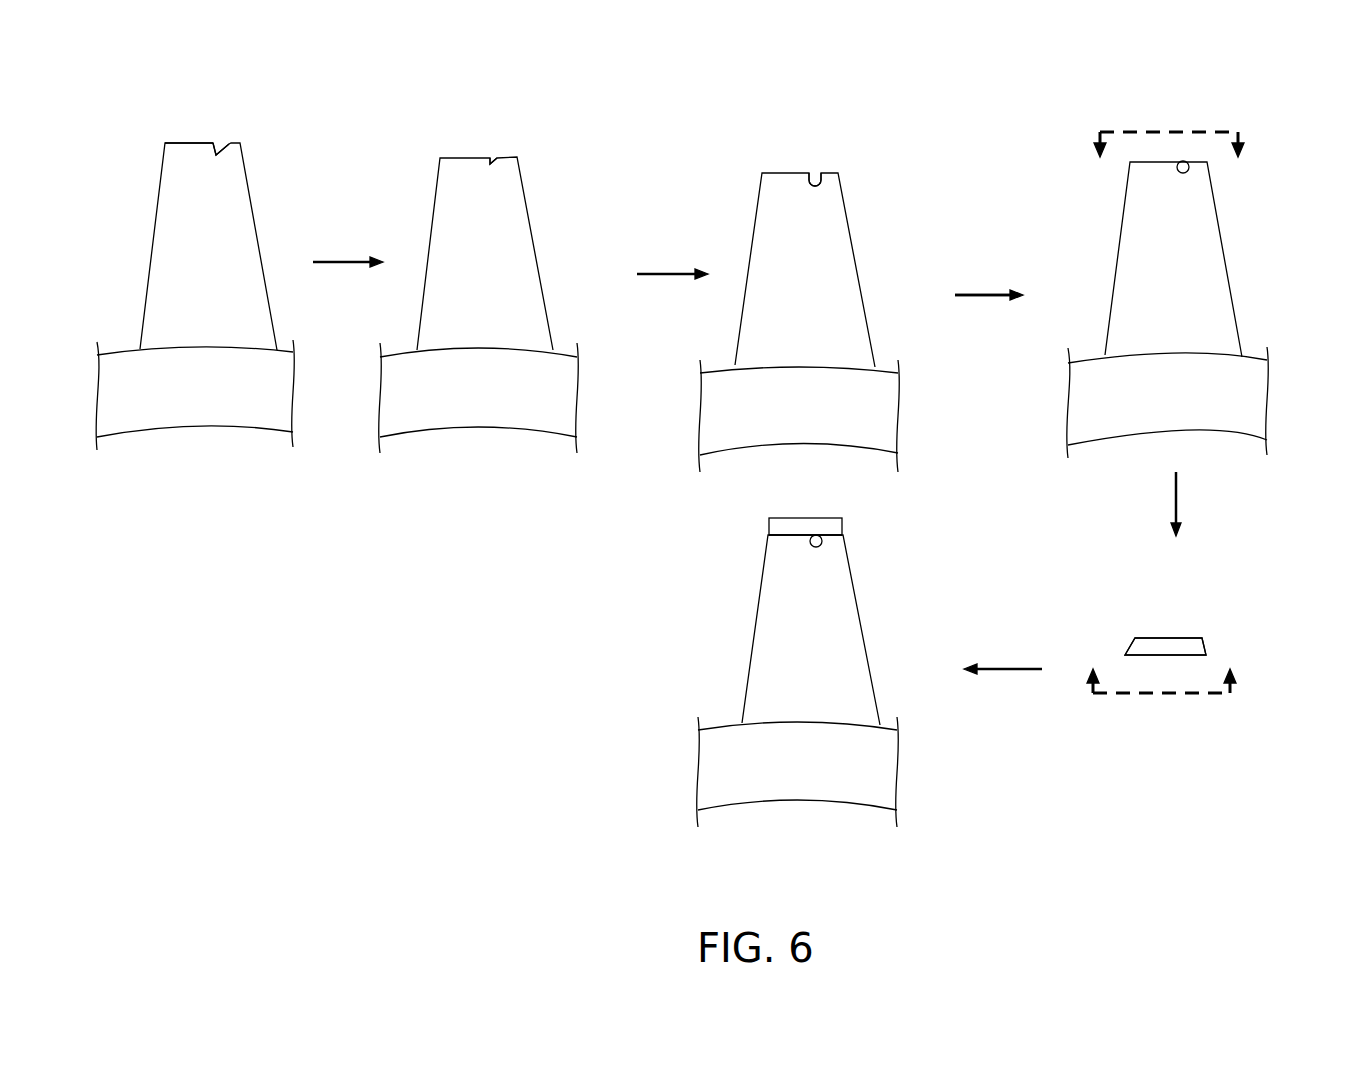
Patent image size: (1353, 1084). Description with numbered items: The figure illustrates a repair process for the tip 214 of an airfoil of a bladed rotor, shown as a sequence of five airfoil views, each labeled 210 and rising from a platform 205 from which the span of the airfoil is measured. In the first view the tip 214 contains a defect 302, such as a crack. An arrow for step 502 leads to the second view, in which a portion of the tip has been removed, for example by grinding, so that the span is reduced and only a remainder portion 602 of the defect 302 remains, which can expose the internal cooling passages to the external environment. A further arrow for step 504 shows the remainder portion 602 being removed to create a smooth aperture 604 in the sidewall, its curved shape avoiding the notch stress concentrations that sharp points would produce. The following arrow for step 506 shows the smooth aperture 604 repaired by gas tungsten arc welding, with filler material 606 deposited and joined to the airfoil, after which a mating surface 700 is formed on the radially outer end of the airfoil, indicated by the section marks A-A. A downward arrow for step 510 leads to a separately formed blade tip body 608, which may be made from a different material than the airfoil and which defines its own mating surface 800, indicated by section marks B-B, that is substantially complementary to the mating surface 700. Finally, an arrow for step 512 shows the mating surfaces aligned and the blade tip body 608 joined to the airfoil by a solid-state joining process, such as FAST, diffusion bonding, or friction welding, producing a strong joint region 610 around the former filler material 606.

The platform 205 is at (237, 347).
The airfoil blade 210 is at (187, 286).
The tip 214 is at (185, 143).
The defect 302 is at (220, 145).
The step of removing a portion of the tip 502 is at (340, 261).
The step of removing the remainder portion of the defect 504 is at (663, 272).
The step of repairing the smooth aperture via gas tungsten arc welding 506 is at (982, 293).
The step of forming a blade tip body 510 is at (1199, 504).
The step of aligning and joining via solid-state joining 512 is at (1000, 668).
The remainder portion 602 is at (493, 160).
The smooth aperture 604 is at (822, 178).
The filler material 606 is at (1189, 169).
The blade tip body 608 is at (1168, 648).
The joint region 610 is at (822, 536).
The mating surface of the airfoil 700 is at (1153, 162).
The mating surface of the blade tip body 800 is at (1148, 655).